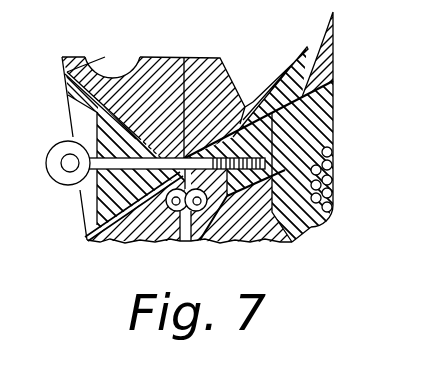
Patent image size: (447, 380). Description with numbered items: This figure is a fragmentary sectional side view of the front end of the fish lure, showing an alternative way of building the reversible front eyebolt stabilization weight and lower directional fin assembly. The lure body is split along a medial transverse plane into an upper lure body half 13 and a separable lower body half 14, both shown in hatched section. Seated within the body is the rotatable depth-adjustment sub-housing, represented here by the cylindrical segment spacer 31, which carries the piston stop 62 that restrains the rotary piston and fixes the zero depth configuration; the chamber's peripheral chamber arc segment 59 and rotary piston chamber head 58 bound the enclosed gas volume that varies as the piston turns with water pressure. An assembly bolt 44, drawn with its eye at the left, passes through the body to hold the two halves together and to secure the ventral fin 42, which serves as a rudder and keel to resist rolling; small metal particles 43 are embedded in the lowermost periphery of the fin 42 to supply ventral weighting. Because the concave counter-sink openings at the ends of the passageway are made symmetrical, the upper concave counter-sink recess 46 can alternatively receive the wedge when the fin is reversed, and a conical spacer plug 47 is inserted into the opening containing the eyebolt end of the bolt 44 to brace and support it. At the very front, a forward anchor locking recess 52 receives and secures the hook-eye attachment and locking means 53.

The upper lure body half 13 is at (121, 243).
The lower body half 14 is at (255, 242).
The cylindrical segment spacer 31 is at (68, 56).
The ventral fin 42 is at (326, 42).
The small metal particles 43 is at (329, 172).
The assembly bolt 44 is at (46, 161).
The upper concave counter-sink recess 46 is at (85, 200).
The conical spacer plug 47 is at (97, 122).
The forward anchor locking recess 52 is at (176, 243).
The hook-eye attachment and locking means 53 is at (190, 243).
The rotary piston chamber head 58 is at (193, 57).
The peripheral chamber arc segment 59 is at (296, 50).
The piston stop 62 is at (85, 56).